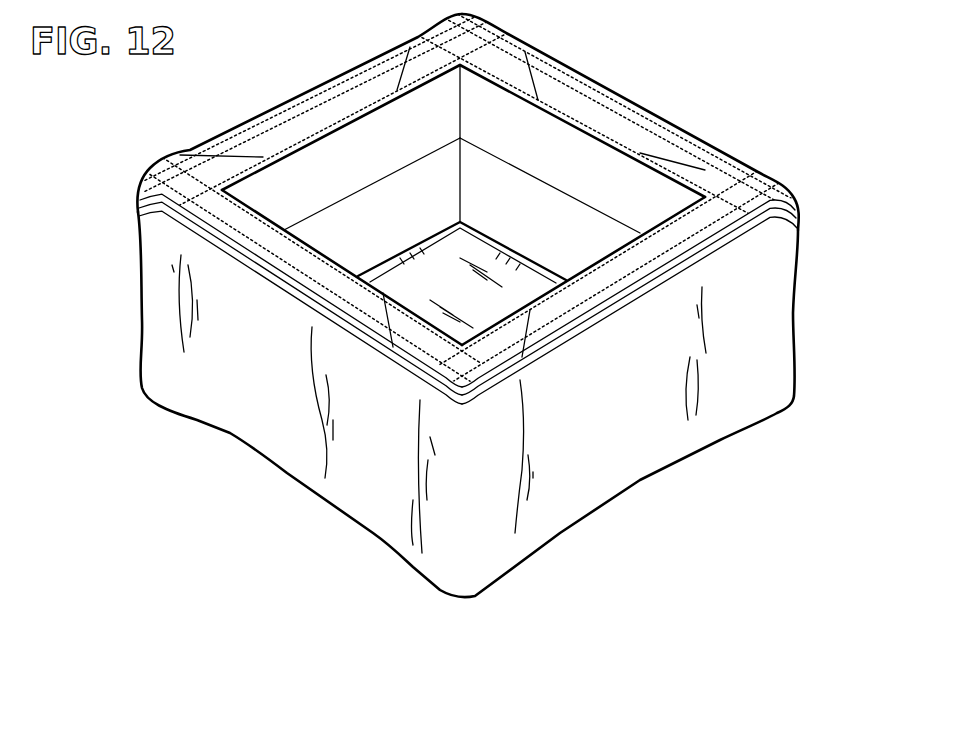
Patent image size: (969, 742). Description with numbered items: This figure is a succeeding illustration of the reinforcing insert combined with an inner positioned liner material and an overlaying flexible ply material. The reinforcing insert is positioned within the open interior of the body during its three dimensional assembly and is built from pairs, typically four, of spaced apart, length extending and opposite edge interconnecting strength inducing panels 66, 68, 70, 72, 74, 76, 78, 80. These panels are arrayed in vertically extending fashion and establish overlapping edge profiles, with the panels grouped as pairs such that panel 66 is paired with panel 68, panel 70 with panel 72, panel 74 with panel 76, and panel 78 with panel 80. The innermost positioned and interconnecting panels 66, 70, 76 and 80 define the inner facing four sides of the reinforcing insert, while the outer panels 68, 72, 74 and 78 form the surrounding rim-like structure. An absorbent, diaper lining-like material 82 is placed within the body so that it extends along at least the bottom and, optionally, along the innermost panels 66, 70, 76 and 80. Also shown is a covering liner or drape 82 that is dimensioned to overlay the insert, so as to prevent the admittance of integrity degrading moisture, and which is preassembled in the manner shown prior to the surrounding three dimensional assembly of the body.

The strength inducing panel 66 is at (338, 262).
The strength inducing panel 68 is at (286, 264).
The strength inducing panel 70 is at (366, 171).
The strength inducing panel 72 is at (290, 112).
The strength inducing panel 74 is at (657, 124).
The strength inducing panel 76 is at (582, 171).
The strength inducing panel 78 is at (619, 298).
The strength inducing panel 80 is at (597, 262).
The absorbent lining material / covering liner or drape 82 is at (459, 292).